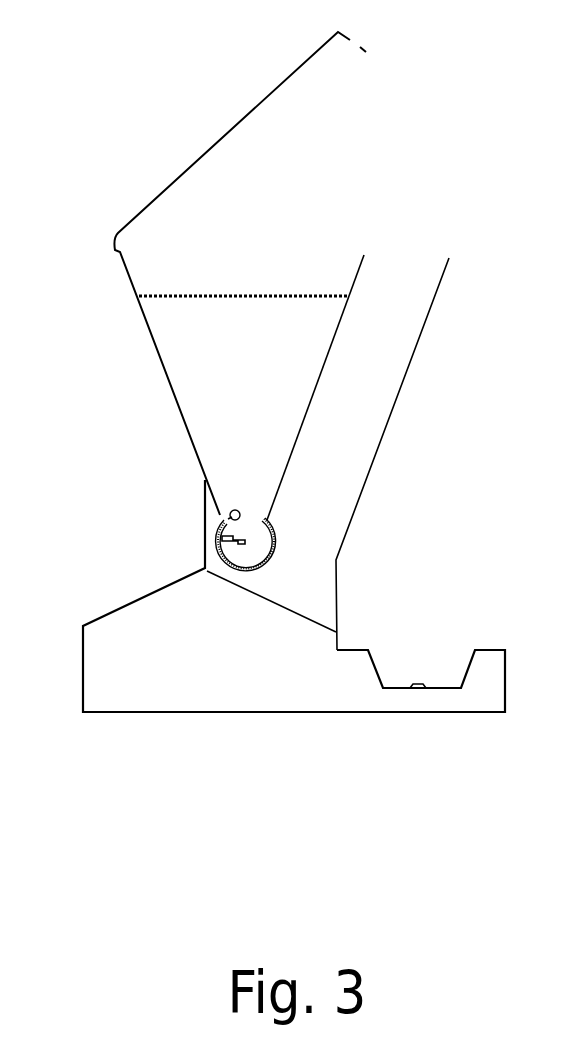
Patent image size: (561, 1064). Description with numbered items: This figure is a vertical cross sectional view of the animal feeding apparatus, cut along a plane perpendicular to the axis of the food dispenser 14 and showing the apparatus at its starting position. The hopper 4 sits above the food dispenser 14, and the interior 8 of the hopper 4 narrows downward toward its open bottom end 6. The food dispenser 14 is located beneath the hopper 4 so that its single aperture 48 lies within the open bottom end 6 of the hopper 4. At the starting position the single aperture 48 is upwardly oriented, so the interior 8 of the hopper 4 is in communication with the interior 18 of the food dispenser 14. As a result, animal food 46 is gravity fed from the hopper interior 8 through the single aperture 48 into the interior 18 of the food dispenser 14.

The hopper 4 is at (157, 348).
The interior of hopper 8 is at (232, 404).
The open bottom end 6 is at (265, 520).
The food dispenser 14 is at (262, 563).
The interior of food dispenser 18 is at (233, 557).
The animal food 46 is at (245, 541).
The single aperture 48 is at (252, 513).